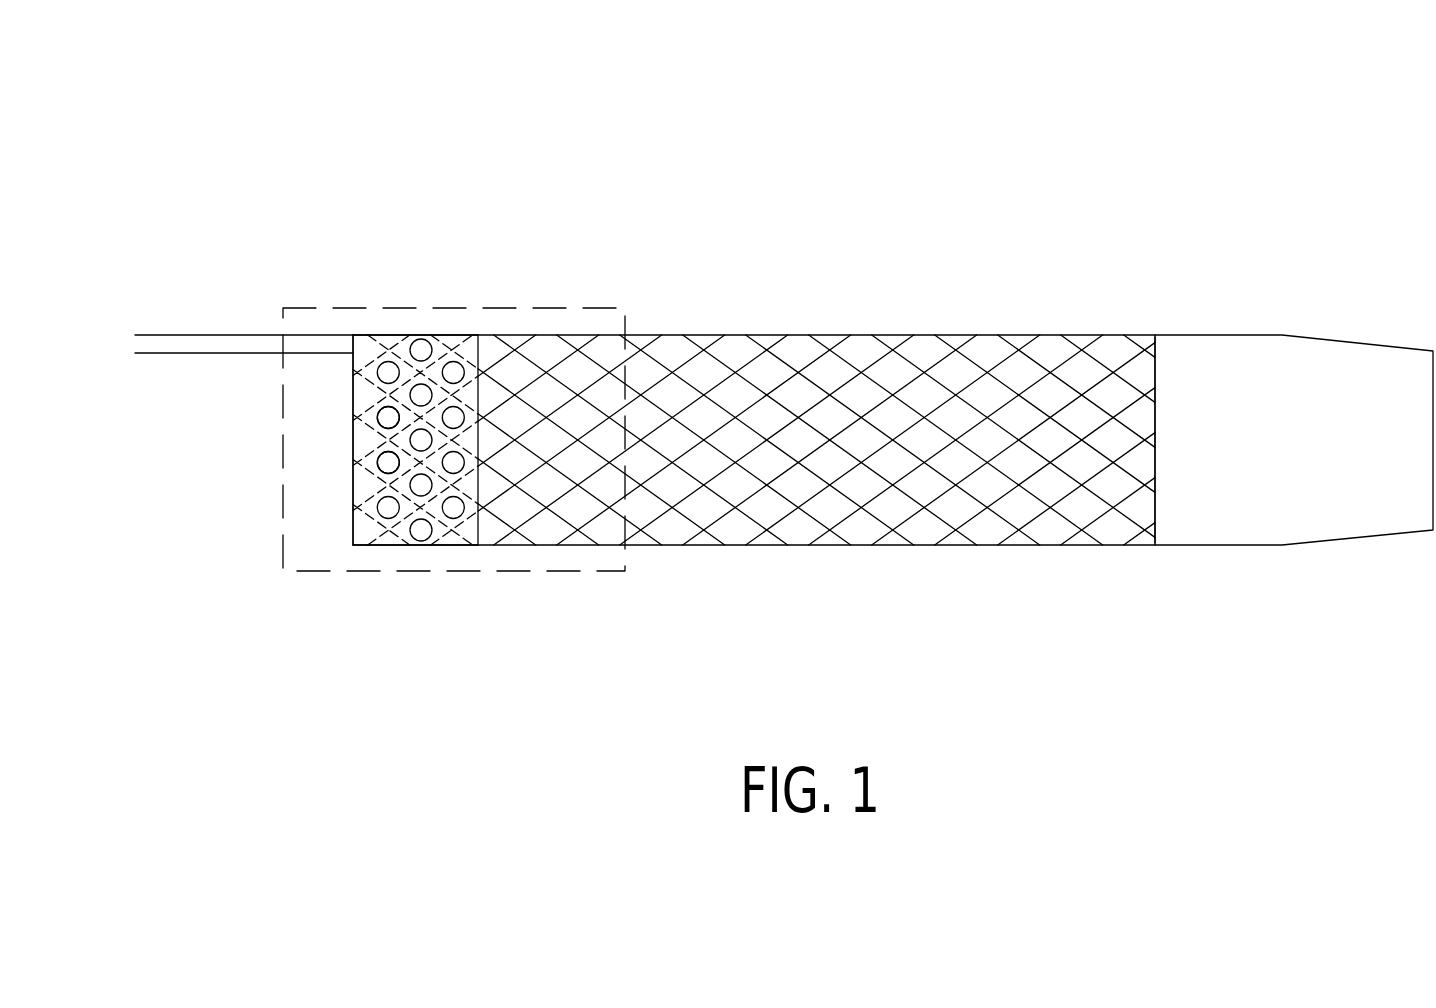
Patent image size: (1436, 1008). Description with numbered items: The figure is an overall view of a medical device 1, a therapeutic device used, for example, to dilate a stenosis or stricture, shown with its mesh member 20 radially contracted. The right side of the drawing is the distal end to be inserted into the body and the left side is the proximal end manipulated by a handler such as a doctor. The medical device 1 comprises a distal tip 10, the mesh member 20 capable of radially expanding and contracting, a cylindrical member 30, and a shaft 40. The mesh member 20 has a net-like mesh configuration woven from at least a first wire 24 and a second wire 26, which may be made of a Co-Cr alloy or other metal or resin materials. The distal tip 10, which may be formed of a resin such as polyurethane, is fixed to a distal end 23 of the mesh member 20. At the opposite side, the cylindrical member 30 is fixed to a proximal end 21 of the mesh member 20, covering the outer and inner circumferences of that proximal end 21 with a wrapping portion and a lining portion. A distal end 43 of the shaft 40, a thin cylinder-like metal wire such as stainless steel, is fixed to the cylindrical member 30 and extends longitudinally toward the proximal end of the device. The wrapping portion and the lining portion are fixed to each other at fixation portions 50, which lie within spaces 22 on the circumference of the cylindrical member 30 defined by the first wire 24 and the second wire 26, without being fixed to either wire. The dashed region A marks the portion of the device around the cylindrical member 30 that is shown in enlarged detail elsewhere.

The medical device 1 is at (899, 205).
The distal tip 10 is at (1269, 328).
The mesh member 20 is at (937, 334).
The proximal end 21 is at (352, 548).
The spaces 22 is at (480, 514).
The distal end 23 is at (1157, 548).
The first wire 24 is at (785, 360).
The second wire 26 is at (785, 521).
The cylindrical member 30 is at (478, 547).
The shaft 40 is at (234, 326).
The distal end 43 is at (353, 333).
The fixation portions 50 is at (377, 463).
The region A is at (560, 308).